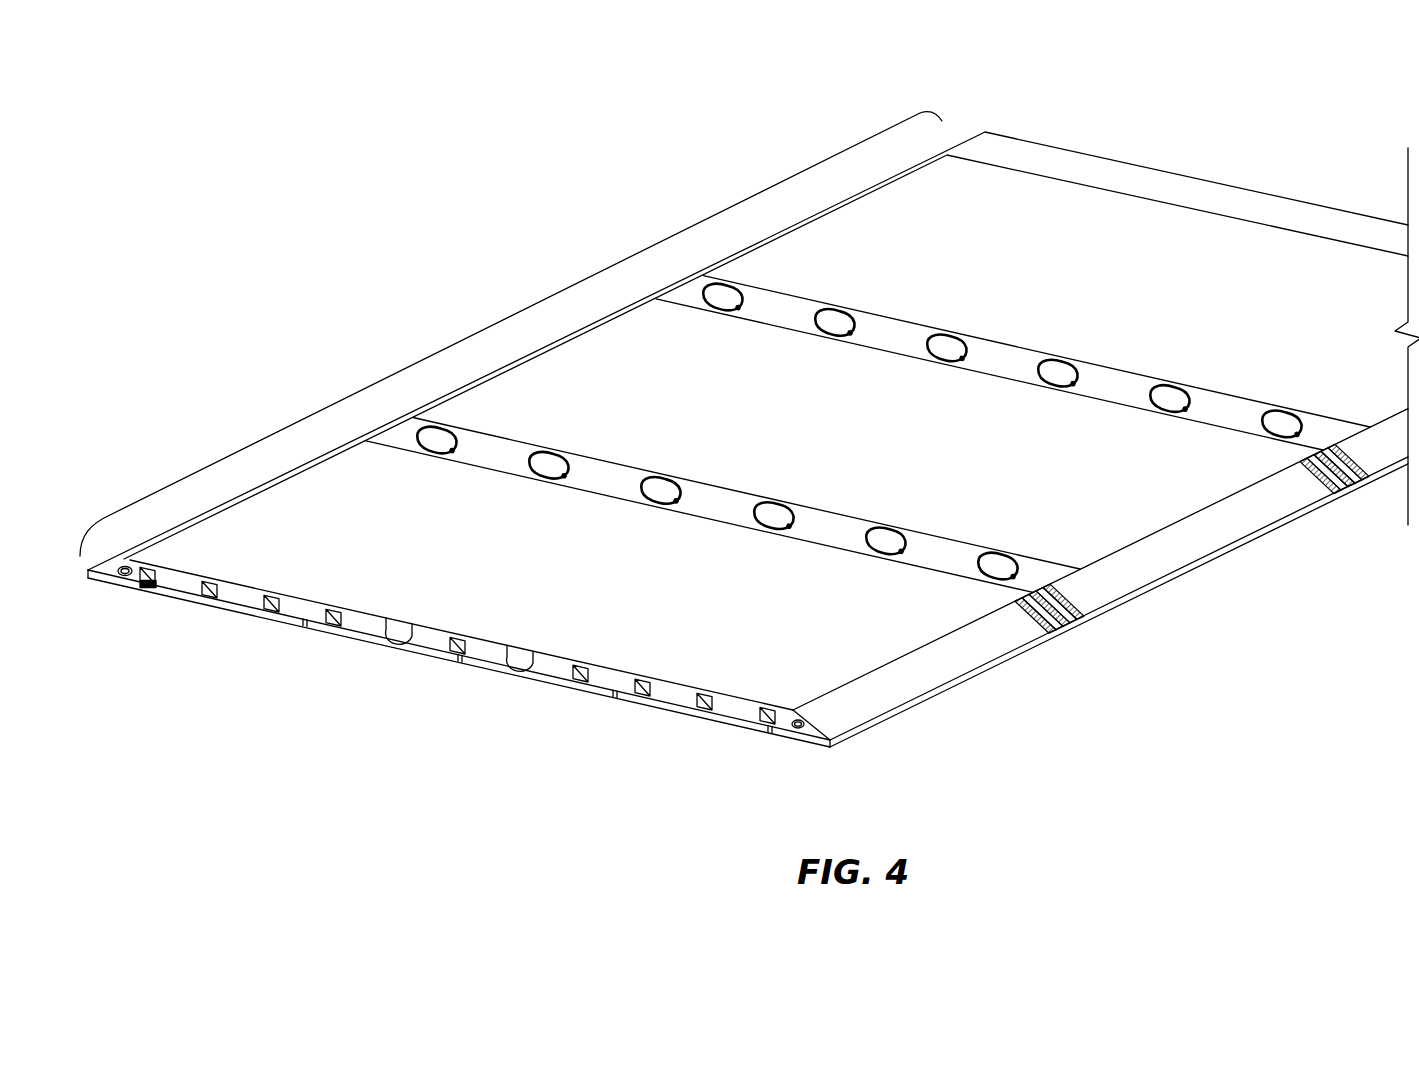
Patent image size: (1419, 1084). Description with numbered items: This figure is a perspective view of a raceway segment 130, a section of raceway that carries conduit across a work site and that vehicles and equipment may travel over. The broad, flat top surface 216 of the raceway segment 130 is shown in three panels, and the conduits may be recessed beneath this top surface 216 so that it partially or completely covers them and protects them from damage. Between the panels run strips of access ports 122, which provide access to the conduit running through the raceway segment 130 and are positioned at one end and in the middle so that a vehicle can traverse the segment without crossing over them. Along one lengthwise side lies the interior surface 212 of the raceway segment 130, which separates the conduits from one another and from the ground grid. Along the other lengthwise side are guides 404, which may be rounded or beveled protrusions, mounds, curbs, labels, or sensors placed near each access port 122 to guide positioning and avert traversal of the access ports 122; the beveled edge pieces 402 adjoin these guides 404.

The raceway segment 130 is at (512, 315).
The access port 122 is at (1158, 182).
The top surface 216 is at (621, 588).
The interior surface 212 is at (243, 598).
The edge ramp 402 is at (937, 675).
The guide 404 is at (1064, 627).